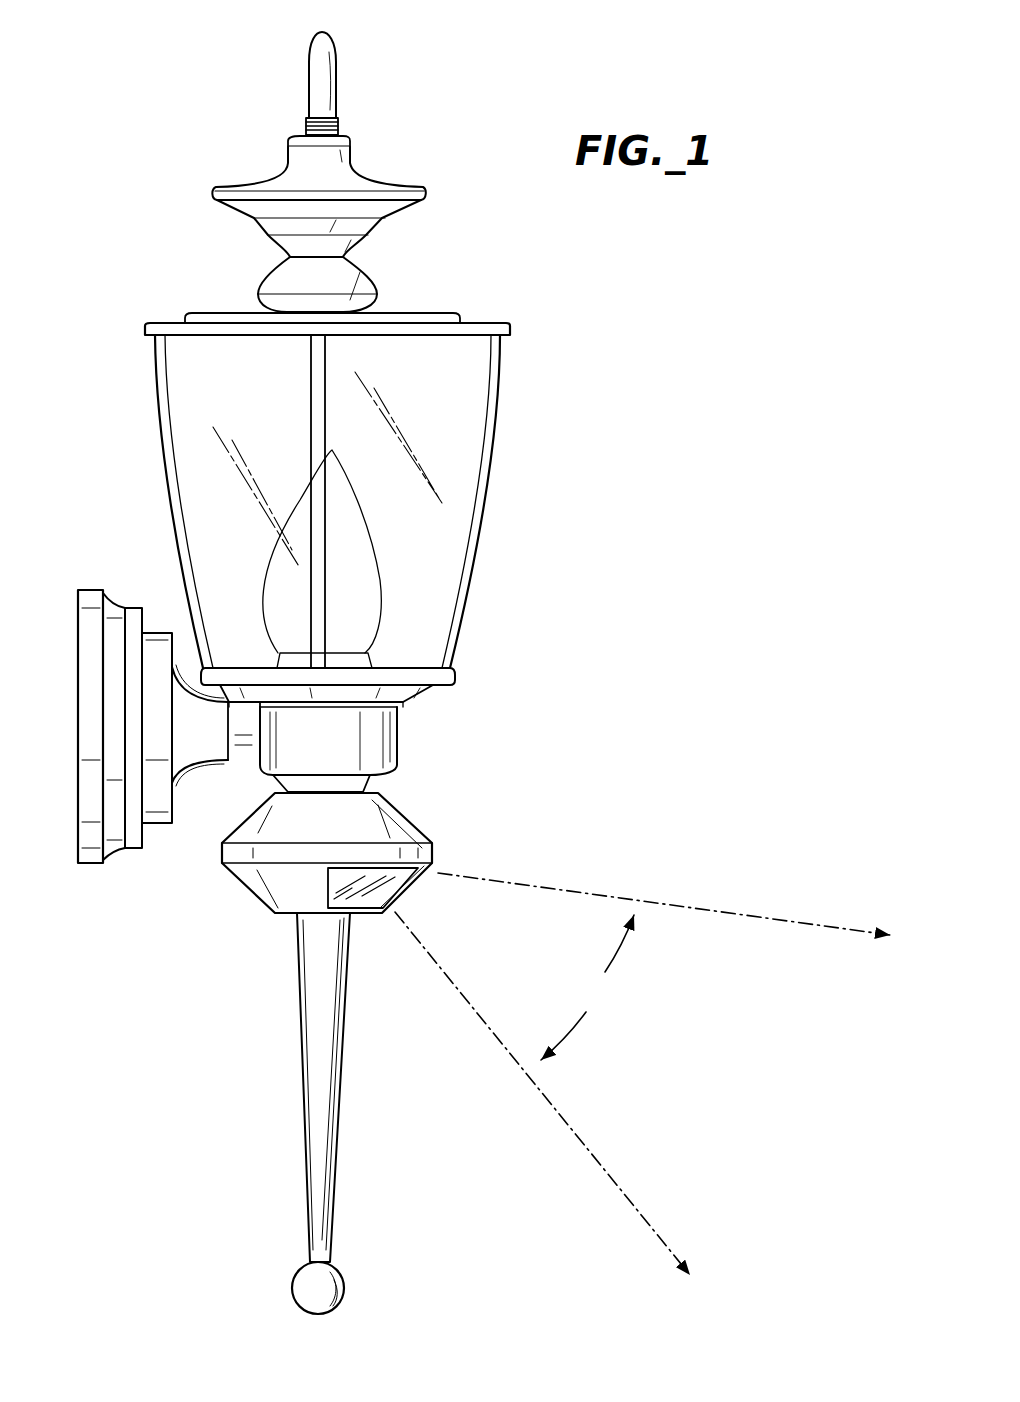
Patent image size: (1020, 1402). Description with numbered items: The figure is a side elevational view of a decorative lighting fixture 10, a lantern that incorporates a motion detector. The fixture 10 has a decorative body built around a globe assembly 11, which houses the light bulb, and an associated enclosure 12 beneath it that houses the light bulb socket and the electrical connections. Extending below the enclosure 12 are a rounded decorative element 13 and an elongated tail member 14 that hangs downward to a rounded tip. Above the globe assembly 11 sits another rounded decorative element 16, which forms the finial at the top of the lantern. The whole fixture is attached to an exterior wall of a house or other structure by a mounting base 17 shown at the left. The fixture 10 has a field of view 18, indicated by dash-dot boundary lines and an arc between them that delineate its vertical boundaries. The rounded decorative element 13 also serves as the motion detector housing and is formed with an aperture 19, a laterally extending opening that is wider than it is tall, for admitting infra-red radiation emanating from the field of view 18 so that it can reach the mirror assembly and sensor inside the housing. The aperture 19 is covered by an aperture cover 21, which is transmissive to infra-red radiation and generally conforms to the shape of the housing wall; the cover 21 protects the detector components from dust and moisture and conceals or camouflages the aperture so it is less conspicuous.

The decorative lighting fixture 10 is at (526, 485).
The globe assembly 11 is at (490, 560).
The enclosure 12 is at (404, 739).
The rounded decorative element 13 is at (412, 814).
The elongated tail member 14 is at (303, 1118).
The rounded decorative element 16 is at (399, 174).
The mounting base 17 is at (118, 600).
The field of view 18 is at (642, 1074).
The aperture 19 is at (412, 891).
The aperture cover 21 is at (363, 912).